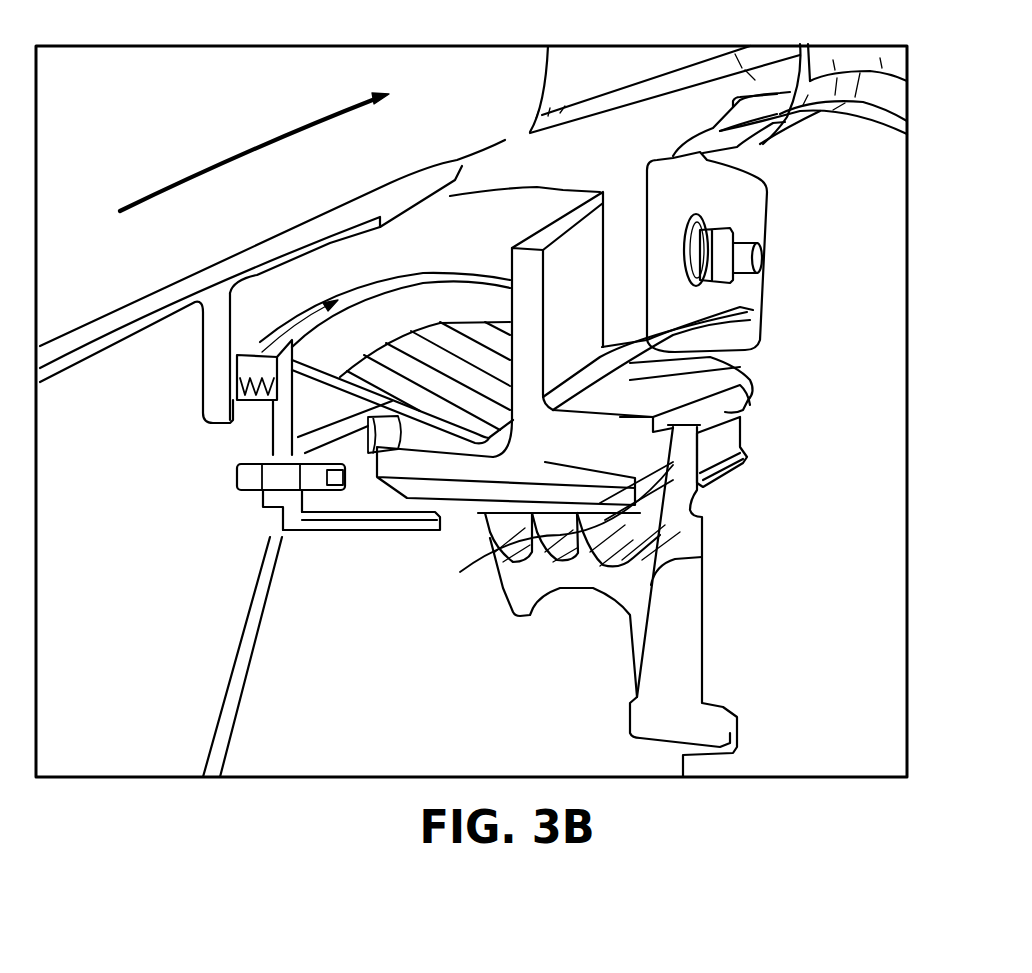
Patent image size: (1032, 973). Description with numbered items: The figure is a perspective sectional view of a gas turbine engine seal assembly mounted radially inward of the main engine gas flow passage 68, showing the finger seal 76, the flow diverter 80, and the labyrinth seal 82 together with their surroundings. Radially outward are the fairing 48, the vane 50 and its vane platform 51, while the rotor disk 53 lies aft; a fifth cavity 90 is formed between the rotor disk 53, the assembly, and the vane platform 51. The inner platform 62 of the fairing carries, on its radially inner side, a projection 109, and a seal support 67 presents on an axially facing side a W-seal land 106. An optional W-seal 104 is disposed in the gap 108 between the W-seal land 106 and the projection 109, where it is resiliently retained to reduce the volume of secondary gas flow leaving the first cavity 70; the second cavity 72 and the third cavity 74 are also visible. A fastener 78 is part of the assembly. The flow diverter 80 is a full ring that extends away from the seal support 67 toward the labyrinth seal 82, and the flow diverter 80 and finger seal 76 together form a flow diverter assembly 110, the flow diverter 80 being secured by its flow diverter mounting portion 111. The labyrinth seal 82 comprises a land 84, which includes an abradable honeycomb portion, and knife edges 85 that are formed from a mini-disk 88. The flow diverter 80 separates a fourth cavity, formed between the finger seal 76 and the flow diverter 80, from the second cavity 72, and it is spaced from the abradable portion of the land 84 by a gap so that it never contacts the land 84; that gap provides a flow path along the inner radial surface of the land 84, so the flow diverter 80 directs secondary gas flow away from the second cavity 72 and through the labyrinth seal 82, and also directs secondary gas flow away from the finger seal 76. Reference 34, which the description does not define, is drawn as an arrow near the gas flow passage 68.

The core flow direction arrow 34 is at (181, 174).
The fairing 48 is at (150, 272).
The vane 50 is at (574, 86).
The vane platform 51 is at (574, 163).
The rotor disk 53 is at (816, 246).
The inner platform 62 is at (118, 334).
The seal support 67 is at (232, 698).
The main engine gas flow passage 68 is at (358, 163).
The first cavity 70 is at (79, 503).
The second cavity 72 is at (391, 648).
The third cavity 74 is at (248, 357).
The finger seal 76 is at (445, 343).
The fastener 78 is at (262, 485).
The flow diverter 80 is at (384, 522).
The labyrinth seal 82 is at (560, 462).
The land 84 is at (589, 460).
The knife edges 85 is at (525, 560).
The mini-disk 88 is at (613, 597).
The fifth cavity 90 is at (755, 198).
The W-seal 104 is at (318, 338).
The W-seal land 106 is at (299, 435).
The gap 108 is at (242, 412).
The projection 109 is at (217, 387).
The flow diverter assembly 110 is at (309, 552).
The flow diverter mounting portion 111 is at (262, 546).